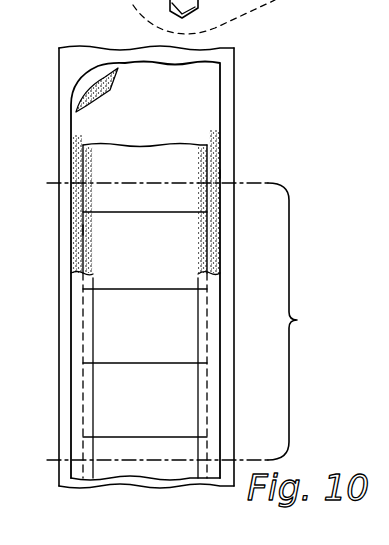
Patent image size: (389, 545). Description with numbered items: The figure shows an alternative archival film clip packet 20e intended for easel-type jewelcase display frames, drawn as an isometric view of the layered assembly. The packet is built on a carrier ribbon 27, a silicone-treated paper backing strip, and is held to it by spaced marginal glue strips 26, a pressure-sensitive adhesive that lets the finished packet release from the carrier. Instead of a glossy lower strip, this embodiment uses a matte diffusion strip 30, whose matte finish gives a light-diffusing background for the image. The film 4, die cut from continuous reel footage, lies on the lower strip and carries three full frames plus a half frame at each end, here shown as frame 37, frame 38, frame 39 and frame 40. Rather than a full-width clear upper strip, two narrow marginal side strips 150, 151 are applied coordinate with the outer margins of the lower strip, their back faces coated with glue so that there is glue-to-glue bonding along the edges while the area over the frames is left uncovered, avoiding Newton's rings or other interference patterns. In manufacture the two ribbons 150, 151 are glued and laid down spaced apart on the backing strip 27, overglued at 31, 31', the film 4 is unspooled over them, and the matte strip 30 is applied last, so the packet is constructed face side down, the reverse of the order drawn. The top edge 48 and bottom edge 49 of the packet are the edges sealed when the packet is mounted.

The carrier ribbon 27 is at (89, 58).
The glue strips 26 is at (86, 92).
The matte diffusion strip 30 is at (160, 113).
The film 4 is at (176, 145).
The top edge 48 is at (137, 166).
The frame 37 is at (190, 176).
The overglue 31 is at (246, 165).
The overglue 31' is at (109, 233).
The frame 38 is at (160, 268).
The marginal side strip 151 is at (84, 331).
The frame 39 is at (166, 346).
The marginal side strip 150 is at (200, 332).
The frame 40 is at (168, 412).
The bottom edge 49 is at (115, 460).
The packet embodiment 20e is at (306, 321).